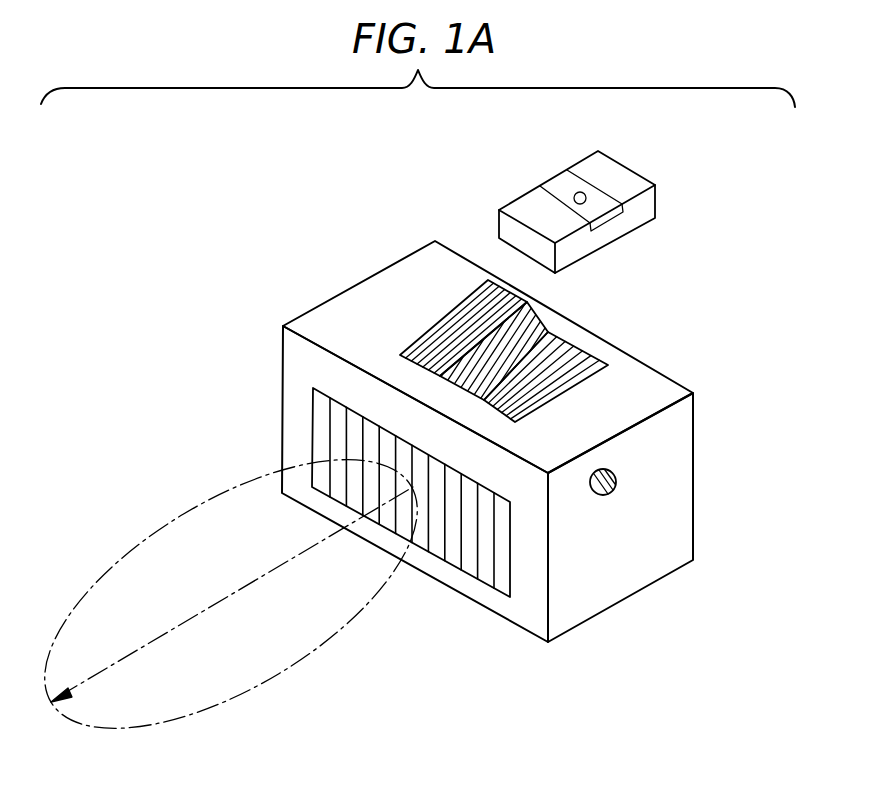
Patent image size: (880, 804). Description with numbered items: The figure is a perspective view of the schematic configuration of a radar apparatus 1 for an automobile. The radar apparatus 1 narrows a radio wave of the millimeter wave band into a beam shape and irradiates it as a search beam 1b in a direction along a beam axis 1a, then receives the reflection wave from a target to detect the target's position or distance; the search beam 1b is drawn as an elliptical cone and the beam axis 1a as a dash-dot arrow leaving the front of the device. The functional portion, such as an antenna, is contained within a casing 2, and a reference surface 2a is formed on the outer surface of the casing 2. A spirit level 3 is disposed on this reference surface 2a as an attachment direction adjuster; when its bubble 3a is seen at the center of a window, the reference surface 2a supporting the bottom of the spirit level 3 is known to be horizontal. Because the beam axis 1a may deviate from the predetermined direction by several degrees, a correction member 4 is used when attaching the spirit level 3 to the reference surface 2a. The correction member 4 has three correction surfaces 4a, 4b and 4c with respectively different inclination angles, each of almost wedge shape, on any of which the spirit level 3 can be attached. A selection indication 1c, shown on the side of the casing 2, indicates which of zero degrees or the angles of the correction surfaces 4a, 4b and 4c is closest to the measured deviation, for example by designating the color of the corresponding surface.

The radar apparatus for an automobile 1 is at (294, 247).
The beam axis 1a is at (162, 637).
The search beam 1b is at (345, 641).
The selection indication 1c is at (616, 482).
The casing 2 is at (736, 427).
The reference surface 2a is at (655, 385).
The spirit level 3 is at (642, 208).
The bubble 3a is at (575, 195).
The correction member 4 is at (642, 285).
The correction surface 4a is at (463, 305).
The correction surface 4b is at (531, 332).
The correction surface 4c is at (584, 350).